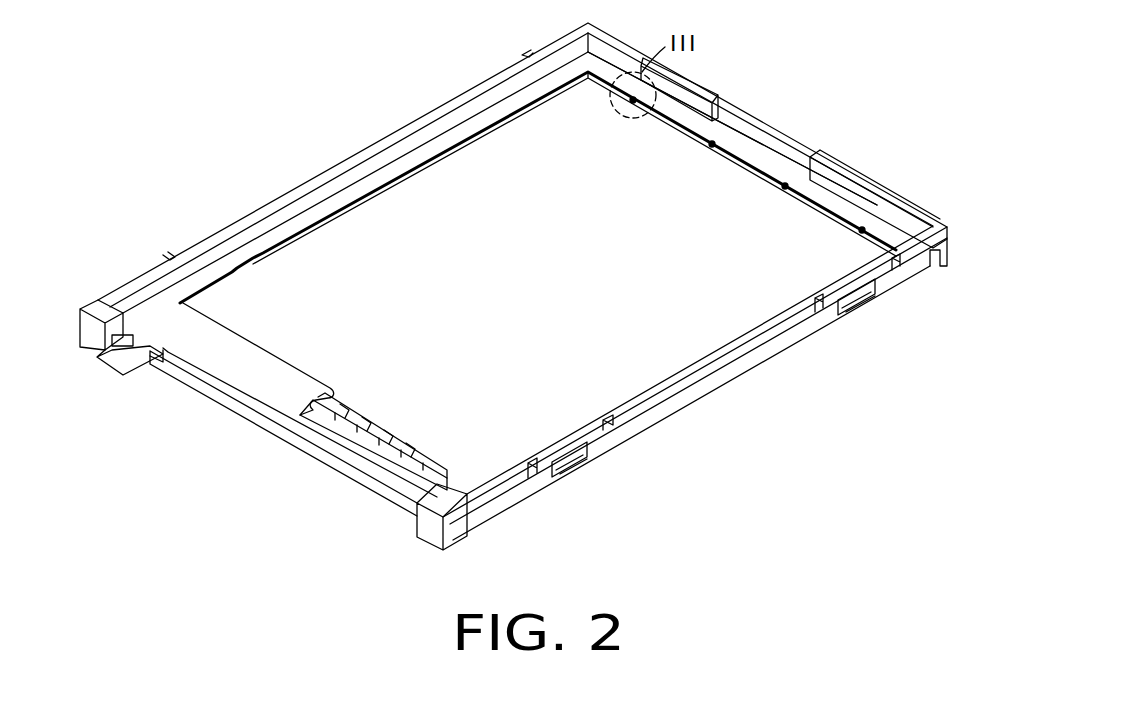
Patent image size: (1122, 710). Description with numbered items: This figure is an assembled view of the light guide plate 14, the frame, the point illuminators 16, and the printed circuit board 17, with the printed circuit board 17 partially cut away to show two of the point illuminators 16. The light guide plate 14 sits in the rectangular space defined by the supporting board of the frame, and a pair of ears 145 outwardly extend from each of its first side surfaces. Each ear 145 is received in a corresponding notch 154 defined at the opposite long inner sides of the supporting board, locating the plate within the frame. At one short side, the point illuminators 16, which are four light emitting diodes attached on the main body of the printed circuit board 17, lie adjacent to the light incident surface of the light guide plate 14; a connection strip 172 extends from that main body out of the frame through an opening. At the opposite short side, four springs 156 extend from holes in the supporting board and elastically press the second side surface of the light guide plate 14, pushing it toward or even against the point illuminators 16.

The light guide plate 14 is at (710, 182).
The ears 145 is at (490, 115).
The notches 154 is at (507, 103).
The springs 156 is at (715, 130).
The point illuminators 16 is at (348, 428).
The printed circuit board 17 is at (243, 365).
The connection strip 172 is at (107, 372).